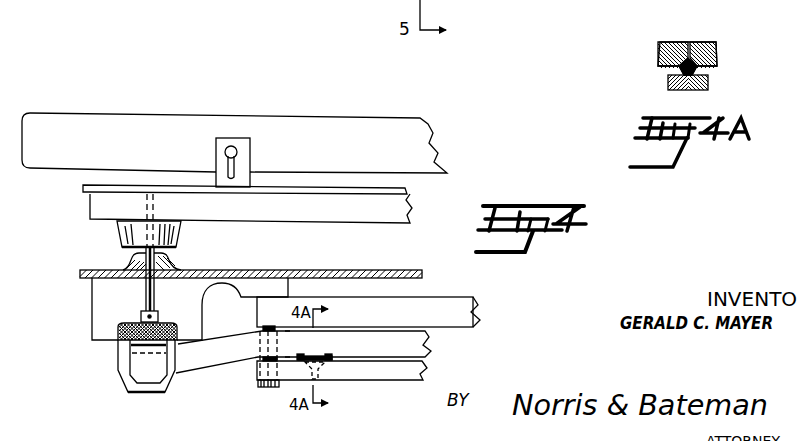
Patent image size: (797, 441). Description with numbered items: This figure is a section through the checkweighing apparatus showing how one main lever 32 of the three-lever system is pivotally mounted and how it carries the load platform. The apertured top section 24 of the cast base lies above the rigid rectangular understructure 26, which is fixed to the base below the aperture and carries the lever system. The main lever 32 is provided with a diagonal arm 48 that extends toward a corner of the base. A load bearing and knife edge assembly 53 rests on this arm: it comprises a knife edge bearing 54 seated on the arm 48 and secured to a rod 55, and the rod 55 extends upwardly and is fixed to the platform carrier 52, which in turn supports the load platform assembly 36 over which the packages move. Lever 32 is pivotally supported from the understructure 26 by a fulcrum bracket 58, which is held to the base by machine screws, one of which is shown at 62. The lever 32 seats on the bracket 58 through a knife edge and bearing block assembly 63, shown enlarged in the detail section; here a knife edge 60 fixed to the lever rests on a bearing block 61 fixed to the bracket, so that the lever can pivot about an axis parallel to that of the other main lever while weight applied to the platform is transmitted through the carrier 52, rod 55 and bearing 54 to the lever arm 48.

In FIG. 4, the load platform assembly 36 is at (329, 119).
In FIG. 4, the platform carrier 52 is at (307, 216).
In FIG. 4, the top section 24 is at (230, 270).
In FIG. 4, the rod 55 is at (153, 292).
In FIG. 4, the knife edge bearing 54 is at (118, 368).
In FIG. 4, the load bearing and knife edge assembly 53 is at (163, 395).
In FIG. 4, the diagonal arm 48 is at (200, 362).
In FIG. 4A, the diagonal arm 48 is at (712, 32).
In FIG. 4, the main lever 32 is at (430, 335).
In FIG. 4, the fulcrum bracket 58 is at (386, 376).
In FIG. 4A, the fulcrum bracket 58 is at (698, 89).
In FIG. 4, the machine screw 62 is at (273, 389).
In FIG. 4, the knife edge 60 is at (316, 357).
In FIG. 4A, the knife edge 60 is at (690, 42).
In FIG. 4, the bearing block 61 is at (322, 371).
In FIG. 4A, the bearing block 61 is at (678, 89).
In FIG. 4, the understructure 26 is at (478, 297).
In FIG. 4A, the knife edge and bearing block assembly 63 is at (650, 57).